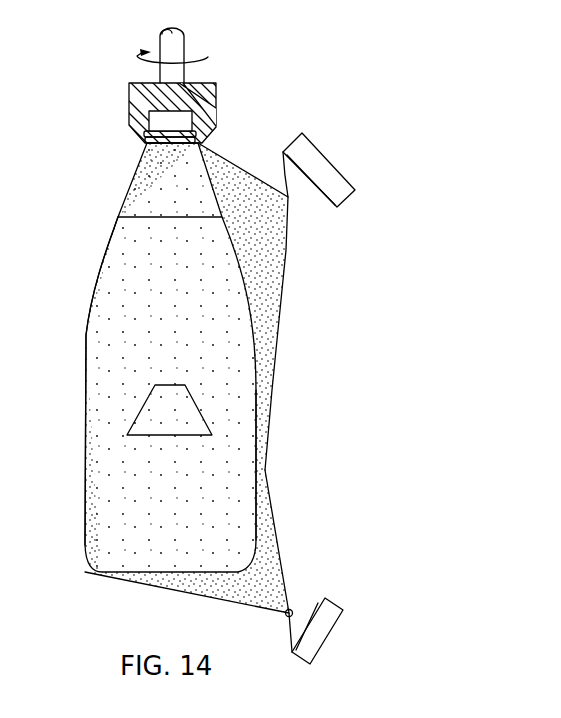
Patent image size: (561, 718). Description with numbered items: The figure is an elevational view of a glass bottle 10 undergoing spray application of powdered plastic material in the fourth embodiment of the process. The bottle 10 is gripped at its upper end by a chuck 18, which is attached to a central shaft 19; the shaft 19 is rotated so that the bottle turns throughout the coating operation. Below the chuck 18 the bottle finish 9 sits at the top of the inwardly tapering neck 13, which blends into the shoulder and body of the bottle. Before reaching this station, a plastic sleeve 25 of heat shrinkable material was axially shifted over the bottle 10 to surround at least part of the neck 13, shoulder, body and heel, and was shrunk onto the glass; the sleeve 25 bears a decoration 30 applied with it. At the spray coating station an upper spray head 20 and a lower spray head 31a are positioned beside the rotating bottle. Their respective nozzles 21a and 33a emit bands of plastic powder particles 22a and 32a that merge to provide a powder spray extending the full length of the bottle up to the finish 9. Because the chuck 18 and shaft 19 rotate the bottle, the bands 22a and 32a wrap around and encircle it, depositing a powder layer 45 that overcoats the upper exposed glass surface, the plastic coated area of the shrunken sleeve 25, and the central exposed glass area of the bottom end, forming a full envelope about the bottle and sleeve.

The bottle finish 9 is at (167, 120).
The glass bottle 10 is at (126, 175).
The neck 13 is at (125, 201).
The chuck 18 is at (216, 108).
The central shaft 19 is at (185, 40).
The upper cutting blade 20 is at (320, 167).
The nozzle 21a is at (289, 198).
The band of plastic powder particles 22a is at (262, 318).
The plastic sleeve 25 is at (85, 352).
The decoration 30 is at (133, 437).
The lower spray head 31a is at (328, 627).
The band of plastic powder particles 32a is at (272, 560).
The nozzle 33a is at (286, 617).
The powder layer 45 is at (233, 468).